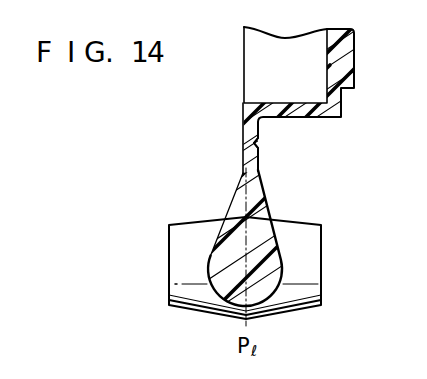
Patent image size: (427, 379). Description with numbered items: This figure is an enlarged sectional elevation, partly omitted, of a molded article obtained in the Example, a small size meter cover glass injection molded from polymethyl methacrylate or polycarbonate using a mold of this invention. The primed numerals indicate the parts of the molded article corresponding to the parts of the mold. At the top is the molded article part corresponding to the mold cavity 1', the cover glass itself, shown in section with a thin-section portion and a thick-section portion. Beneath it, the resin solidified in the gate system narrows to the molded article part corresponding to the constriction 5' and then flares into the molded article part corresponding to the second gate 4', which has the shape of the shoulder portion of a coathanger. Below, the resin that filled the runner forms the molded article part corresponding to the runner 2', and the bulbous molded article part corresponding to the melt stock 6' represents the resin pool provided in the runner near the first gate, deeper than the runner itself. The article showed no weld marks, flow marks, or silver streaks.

The molded article part corresponding to mold cavity 1' is at (314, 87).
The molded article part corresponding to runner 2' is at (270, 268).
The molded article part corresponding to second gate 4' is at (250, 225).
The molded article part corresponding to constriction 5' is at (273, 142).
The molded article part corresponding to melt stock 6' is at (253, 326).